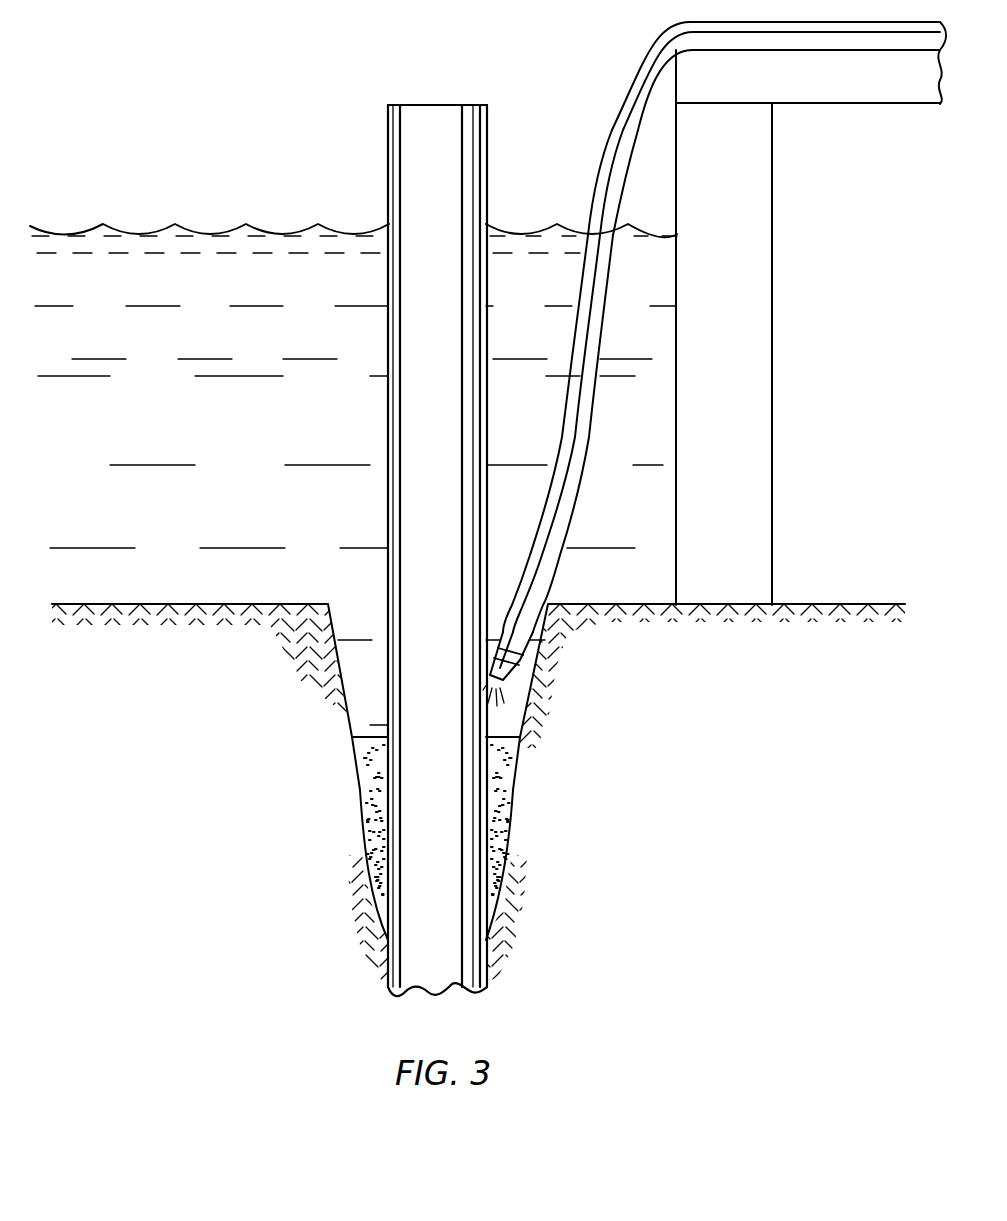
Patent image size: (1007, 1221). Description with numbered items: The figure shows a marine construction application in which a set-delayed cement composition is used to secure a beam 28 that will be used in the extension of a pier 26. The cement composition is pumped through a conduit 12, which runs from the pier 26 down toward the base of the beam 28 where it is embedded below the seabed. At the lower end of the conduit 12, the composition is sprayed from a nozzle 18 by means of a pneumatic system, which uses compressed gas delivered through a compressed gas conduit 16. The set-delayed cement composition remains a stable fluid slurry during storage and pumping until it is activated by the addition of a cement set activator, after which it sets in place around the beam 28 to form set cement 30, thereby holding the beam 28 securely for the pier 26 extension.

The conduit 12 is at (589, 437).
The compressed gas conduit 16 is at (618, 100).
The nozzle 18 is at (505, 668).
The pier 26 is at (852, 92).
The beam 28 is at (410, 399).
The set cement 30 is at (510, 800).